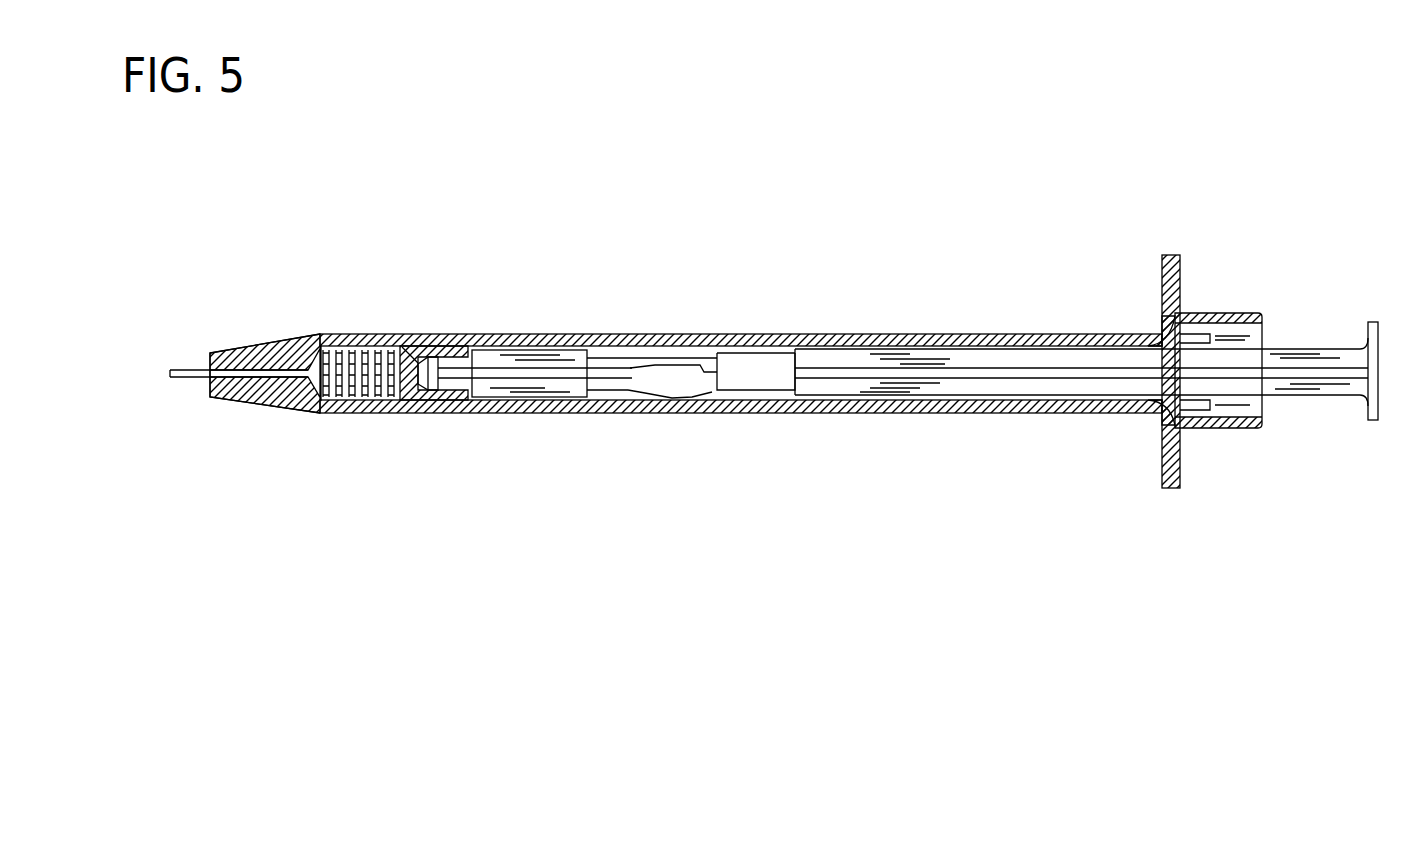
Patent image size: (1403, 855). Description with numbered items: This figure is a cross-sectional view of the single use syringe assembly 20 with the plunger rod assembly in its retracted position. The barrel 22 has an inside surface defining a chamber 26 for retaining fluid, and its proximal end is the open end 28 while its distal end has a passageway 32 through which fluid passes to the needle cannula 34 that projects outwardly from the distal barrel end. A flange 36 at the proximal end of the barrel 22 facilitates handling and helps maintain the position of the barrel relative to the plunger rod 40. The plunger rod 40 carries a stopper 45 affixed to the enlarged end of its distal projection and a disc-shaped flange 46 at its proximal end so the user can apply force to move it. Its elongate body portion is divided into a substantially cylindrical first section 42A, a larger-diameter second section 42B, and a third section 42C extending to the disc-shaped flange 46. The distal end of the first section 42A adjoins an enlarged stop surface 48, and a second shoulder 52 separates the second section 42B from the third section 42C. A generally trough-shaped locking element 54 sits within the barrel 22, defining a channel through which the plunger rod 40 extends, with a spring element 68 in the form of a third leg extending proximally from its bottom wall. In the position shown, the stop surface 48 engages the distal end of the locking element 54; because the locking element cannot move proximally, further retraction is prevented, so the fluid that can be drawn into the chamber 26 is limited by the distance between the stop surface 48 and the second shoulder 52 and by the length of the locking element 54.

The single use syringe assembly 20 is at (437, 417).
The barrel 22 is at (997, 413).
The chamber 26 is at (373, 367).
The open end 28 is at (1233, 313).
The passageway 32 is at (297, 385).
The needle cannula 34 is at (183, 380).
The flange 36 is at (1160, 258).
The plunger rod 40 is at (1312, 396).
The first section 42A is at (640, 358).
The second section 42B is at (754, 353).
The third section 42C is at (955, 350).
The stopper 45 is at (427, 358).
The disc-shaped flange 46 is at (1373, 322).
The stop surface 48 is at (598, 385).
The second shoulder 52 is at (783, 390).
The locking element 54 is at (617, 375).
The spring element 68 is at (708, 393).